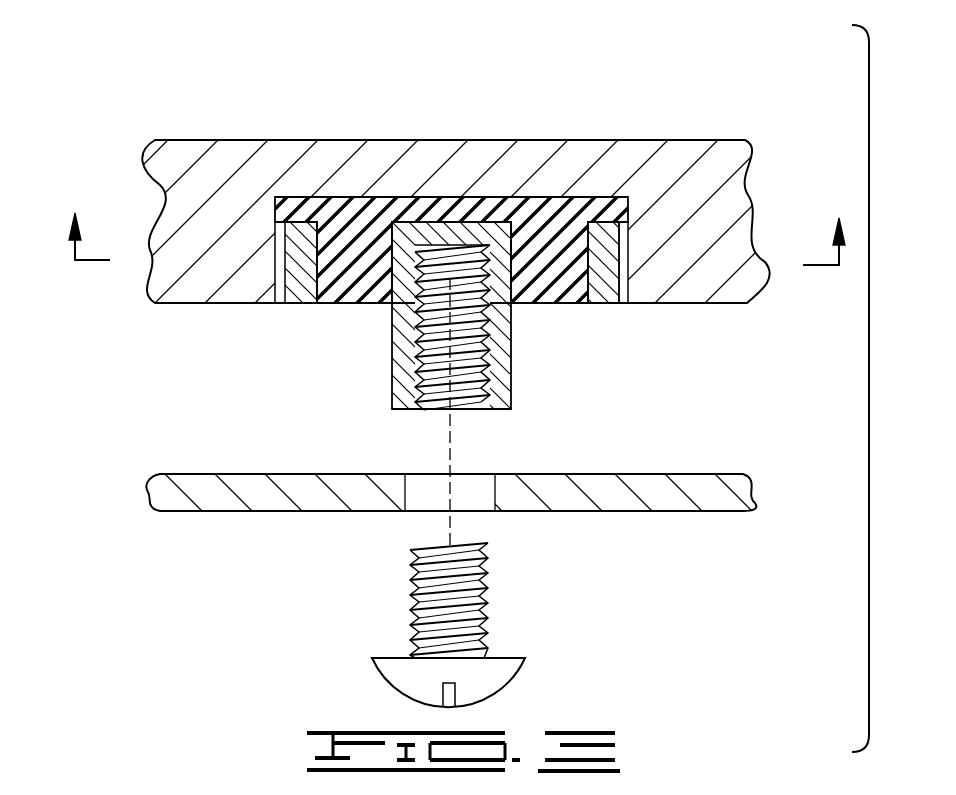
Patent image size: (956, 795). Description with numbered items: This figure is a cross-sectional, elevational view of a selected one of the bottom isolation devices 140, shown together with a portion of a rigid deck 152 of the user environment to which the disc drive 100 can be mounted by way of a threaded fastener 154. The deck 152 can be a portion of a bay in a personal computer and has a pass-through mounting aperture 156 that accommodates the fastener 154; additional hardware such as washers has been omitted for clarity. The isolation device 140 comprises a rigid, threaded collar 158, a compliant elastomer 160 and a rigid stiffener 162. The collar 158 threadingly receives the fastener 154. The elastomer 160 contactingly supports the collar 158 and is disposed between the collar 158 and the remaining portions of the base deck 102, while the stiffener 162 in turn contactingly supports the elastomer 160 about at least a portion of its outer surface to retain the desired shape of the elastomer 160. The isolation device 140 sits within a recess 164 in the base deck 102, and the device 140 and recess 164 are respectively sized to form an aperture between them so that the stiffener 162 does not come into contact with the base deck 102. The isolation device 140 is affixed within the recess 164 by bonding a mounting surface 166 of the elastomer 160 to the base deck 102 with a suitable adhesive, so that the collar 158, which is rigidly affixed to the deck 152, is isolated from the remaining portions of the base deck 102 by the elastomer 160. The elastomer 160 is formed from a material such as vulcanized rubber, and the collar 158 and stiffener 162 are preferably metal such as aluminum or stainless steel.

The disc drive 100 is at (208, 72).
The base deck 102 is at (583, 155).
The bottom isolation device 140 is at (300, 323).
The rigid deck 152 is at (595, 480).
The threaded fastener 154 is at (405, 672).
The pass-through mounting aperture 156 is at (423, 458).
The threaded collar 158 is at (503, 343).
The compliant elastomer 160 is at (360, 292).
The rigid stiffener 162 is at (610, 297).
The recess 164 is at (640, 255).
The mounting surface 166 is at (404, 192).